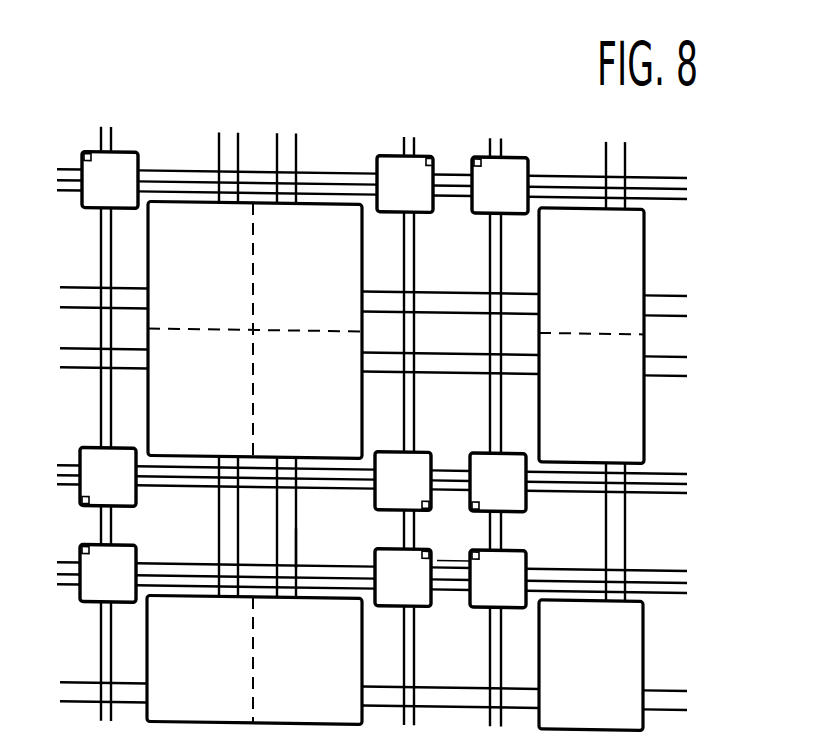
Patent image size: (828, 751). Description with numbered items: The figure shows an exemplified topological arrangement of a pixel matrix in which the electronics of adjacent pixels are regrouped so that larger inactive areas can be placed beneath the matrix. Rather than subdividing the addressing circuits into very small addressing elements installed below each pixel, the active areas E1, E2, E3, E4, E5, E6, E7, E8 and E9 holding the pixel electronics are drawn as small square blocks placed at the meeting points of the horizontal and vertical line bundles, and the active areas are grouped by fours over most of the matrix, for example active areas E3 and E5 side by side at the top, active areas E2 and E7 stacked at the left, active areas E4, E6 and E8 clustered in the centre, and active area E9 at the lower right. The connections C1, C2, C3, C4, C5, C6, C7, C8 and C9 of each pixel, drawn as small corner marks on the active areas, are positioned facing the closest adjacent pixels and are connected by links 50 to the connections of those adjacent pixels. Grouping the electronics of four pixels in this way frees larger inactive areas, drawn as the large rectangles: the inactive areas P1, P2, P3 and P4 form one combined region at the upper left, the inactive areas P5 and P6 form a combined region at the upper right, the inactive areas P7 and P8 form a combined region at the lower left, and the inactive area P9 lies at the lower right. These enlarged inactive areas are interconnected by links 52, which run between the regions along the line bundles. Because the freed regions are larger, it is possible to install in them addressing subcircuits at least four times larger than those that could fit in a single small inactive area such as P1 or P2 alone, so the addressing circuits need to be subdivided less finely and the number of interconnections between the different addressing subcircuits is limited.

The connection C1 is at (84, 161).
The connection C2 is at (84, 505).
The connection C3 is at (428, 161).
The connection C4 is at (428, 506).
The connection C5 is at (477, 160).
The connection C6 is at (474, 506).
The connection C7 is at (84, 555).
The connection C8 is at (430, 558).
The connection C9 is at (473, 558).
The links 50 is at (452, 557).
The links 52 is at (300, 547).
The active area E1 is at (110, 180).
The active area E2 is at (108, 477).
The active area E3 is at (405, 184).
The active area E4 is at (403, 481).
The active area E5 is at (500, 185).
The active area E6 is at (498, 482).
The active area E7 is at (108, 574).
The active area E8 is at (403, 578).
The active area E9 is at (498, 579).
The inactive area P1 is at (215, 285).
The inactive area P2 is at (215, 414).
The inactive area P3 is at (327, 285).
The inactive area P4 is at (327, 414).
The inactive area P5 is at (612, 278).
The inactive area P6 is at (612, 415).
The inactive area P7 is at (217, 685).
The inactive area P8 is at (322, 685).
The inactive area P9 is at (607, 684).